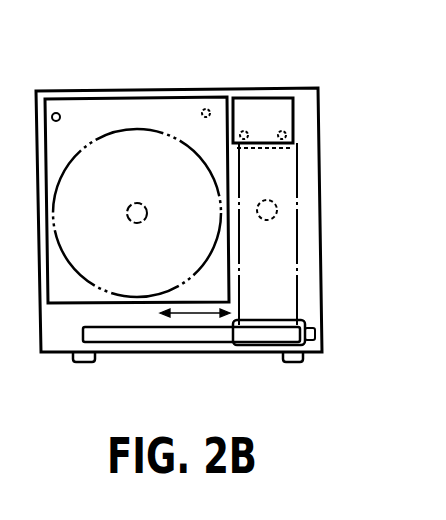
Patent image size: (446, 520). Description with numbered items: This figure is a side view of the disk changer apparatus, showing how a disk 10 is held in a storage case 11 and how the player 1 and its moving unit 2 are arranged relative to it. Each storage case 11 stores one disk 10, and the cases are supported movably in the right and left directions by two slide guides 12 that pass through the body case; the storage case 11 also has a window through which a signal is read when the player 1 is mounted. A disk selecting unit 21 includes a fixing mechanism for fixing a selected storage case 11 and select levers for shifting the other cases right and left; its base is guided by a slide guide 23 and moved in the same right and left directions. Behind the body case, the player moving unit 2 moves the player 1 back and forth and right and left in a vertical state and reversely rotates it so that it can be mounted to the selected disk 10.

The player 1 is at (297, 178).
The player moving unit 2 is at (307, 315).
The disk 10 is at (155, 127).
The storage case 11 is at (88, 108).
The slide guide 12 is at (207, 109).
The disk selecting unit 21 is at (262, 107).
The slide guide 23 is at (250, 134).